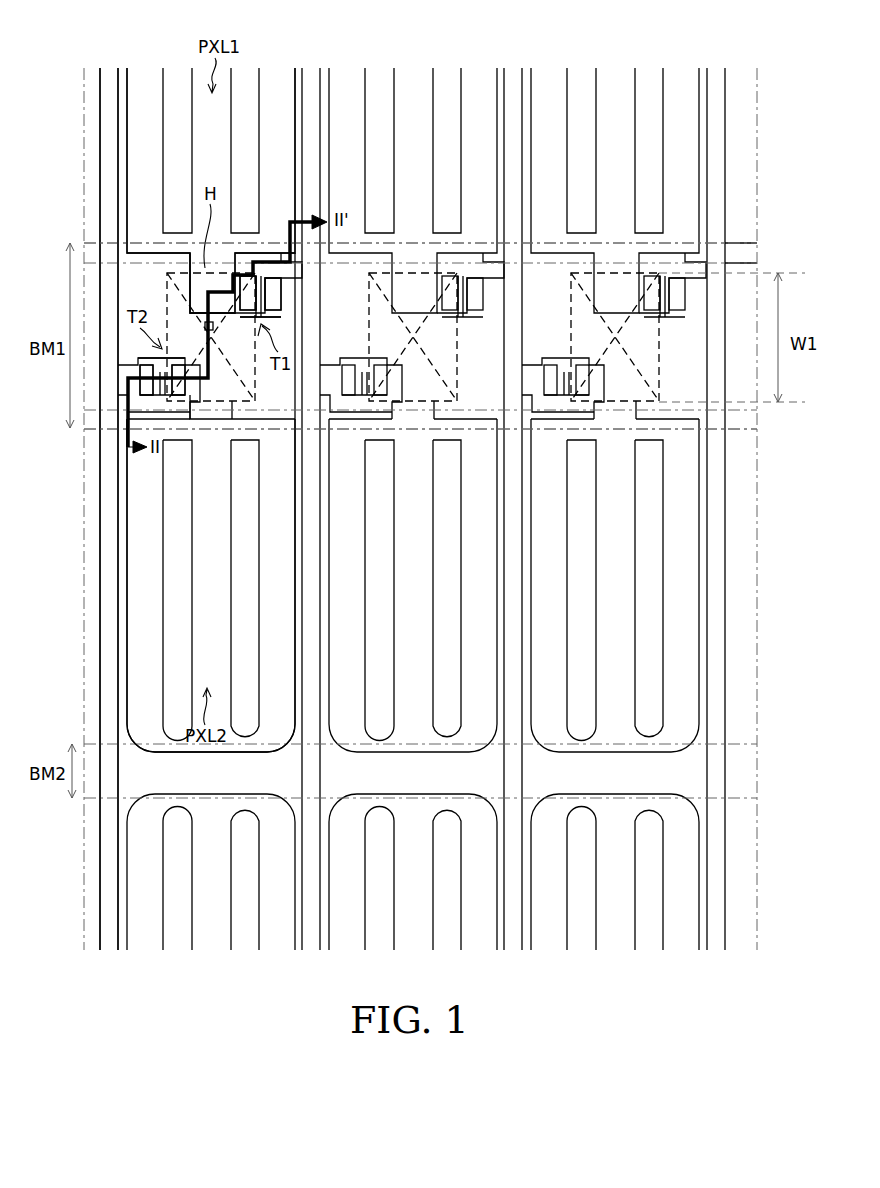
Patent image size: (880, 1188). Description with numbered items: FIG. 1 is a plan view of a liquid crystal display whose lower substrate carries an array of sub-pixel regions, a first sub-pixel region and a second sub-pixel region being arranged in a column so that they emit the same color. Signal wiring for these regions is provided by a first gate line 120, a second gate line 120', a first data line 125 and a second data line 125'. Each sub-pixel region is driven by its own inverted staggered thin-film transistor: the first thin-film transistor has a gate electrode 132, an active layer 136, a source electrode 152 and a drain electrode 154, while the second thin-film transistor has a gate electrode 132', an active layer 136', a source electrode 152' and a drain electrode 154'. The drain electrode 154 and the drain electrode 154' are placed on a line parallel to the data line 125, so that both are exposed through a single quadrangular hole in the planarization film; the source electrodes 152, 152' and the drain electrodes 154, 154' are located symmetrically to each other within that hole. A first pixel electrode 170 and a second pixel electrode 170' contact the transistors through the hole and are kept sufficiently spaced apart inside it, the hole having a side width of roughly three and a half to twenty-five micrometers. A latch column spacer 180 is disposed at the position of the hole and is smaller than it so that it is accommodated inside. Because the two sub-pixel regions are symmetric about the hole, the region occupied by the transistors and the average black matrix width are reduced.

The first pixel electrode 170 is at (79, 509).
The second pixel electrode 170' is at (76, 509).
The first gate line 120 is at (394, 200).
The second gate line 120' is at (394, 450).
The first data line 125 is at (163, 300).
The second data line 125' is at (171, 585).
The gate electrode 132 is at (315, 168).
The gate electrode 132' is at (100, 331).
The active layer 136 is at (262, 165).
The active layer 136' is at (108, 382).
The source electrode 152 is at (283, 162).
The source electrode 152' is at (108, 342).
The drain electrode 154 is at (133, 257).
The drain electrode 154' is at (132, 448).
The latch column spacer 180 is at (208, 322).